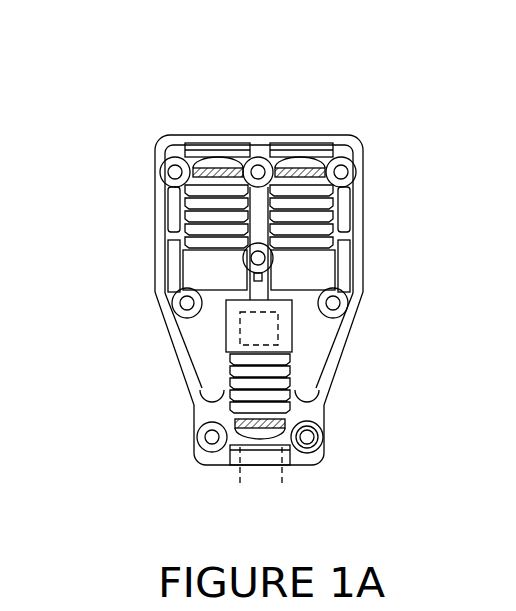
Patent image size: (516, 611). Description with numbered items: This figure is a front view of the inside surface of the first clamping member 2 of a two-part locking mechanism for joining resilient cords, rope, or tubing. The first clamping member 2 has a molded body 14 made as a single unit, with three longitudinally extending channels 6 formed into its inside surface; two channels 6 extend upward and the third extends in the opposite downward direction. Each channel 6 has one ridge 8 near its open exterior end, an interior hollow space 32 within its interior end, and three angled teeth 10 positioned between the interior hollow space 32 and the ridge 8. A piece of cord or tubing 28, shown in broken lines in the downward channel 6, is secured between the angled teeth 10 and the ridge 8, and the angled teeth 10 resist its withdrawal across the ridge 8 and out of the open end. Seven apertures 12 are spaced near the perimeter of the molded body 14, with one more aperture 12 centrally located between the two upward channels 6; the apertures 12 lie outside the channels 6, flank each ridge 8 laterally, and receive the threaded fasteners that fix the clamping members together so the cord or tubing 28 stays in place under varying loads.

The first clamping member 2 is at (143, 128).
The channel 6 is at (217, 133).
The ridge 8 is at (213, 172).
The angled teeth 10 is at (291, 233).
The aperture 12 is at (335, 305).
The molded body 14 is at (157, 210).
The cord or tubing 28 is at (241, 480).
The interior hollow space 32 is at (263, 303).